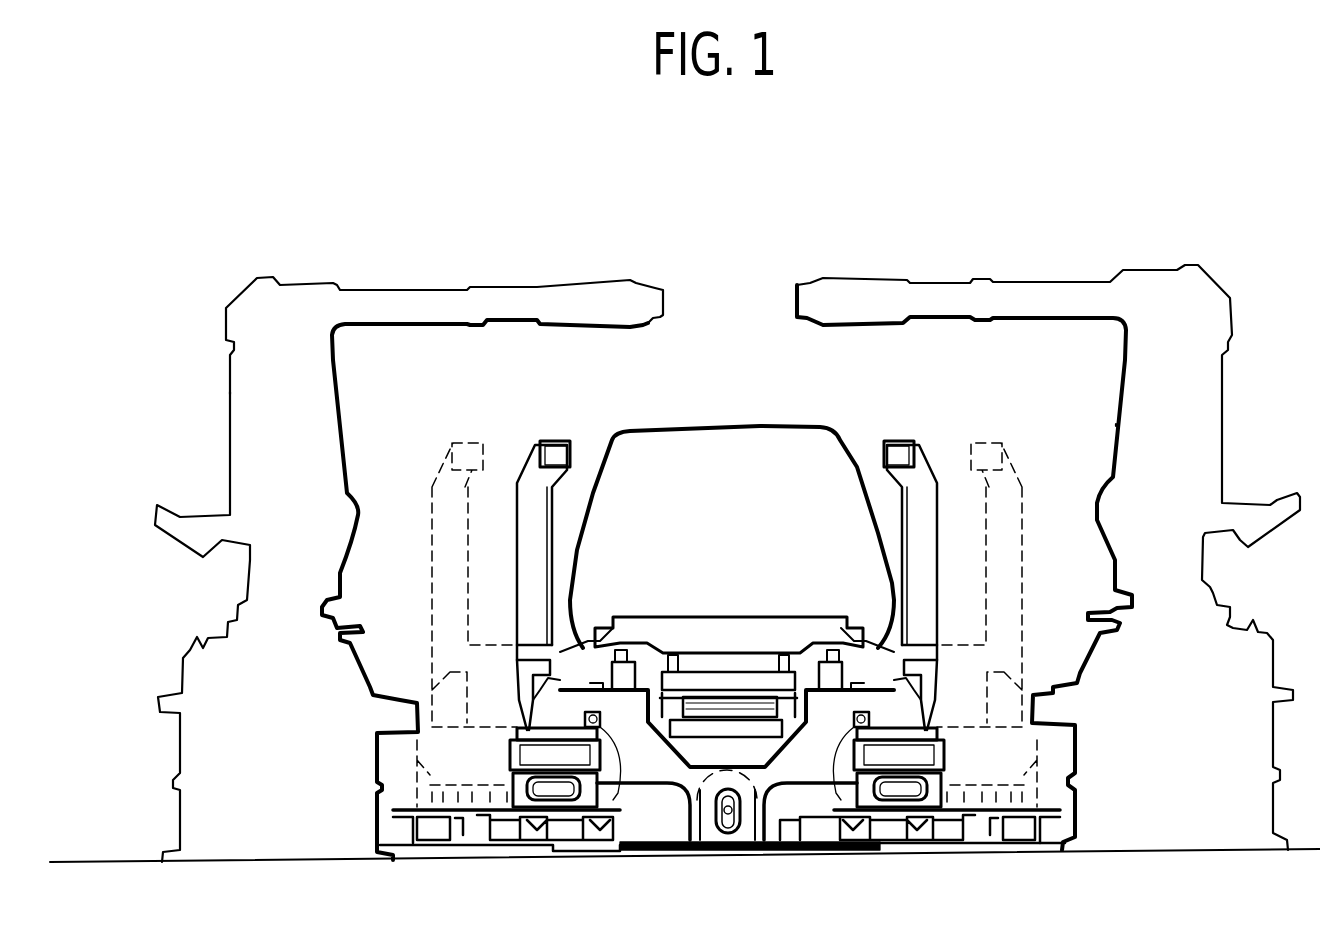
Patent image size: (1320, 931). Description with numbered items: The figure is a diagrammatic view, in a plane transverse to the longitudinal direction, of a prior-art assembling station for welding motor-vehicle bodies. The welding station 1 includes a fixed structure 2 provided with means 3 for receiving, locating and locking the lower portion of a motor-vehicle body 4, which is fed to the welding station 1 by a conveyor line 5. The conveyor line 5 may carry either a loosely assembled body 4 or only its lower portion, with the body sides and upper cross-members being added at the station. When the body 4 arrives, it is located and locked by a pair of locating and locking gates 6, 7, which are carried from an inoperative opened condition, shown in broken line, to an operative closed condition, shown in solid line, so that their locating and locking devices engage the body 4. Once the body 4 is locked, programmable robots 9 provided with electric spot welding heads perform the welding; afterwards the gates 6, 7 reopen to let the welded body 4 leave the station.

The welding station 1 is at (886, 242).
The fixed structure 2 is at (643, 763).
The means for receiving, locating and locking 3 is at (668, 633).
The motor-vehicle body 4 is at (828, 428).
The conveyor line 5 is at (745, 697).
The locating and locking gate 6 is at (585, 450).
The locating and locking gate 7 is at (930, 448).
The programmable robots 9 is at (230, 392).